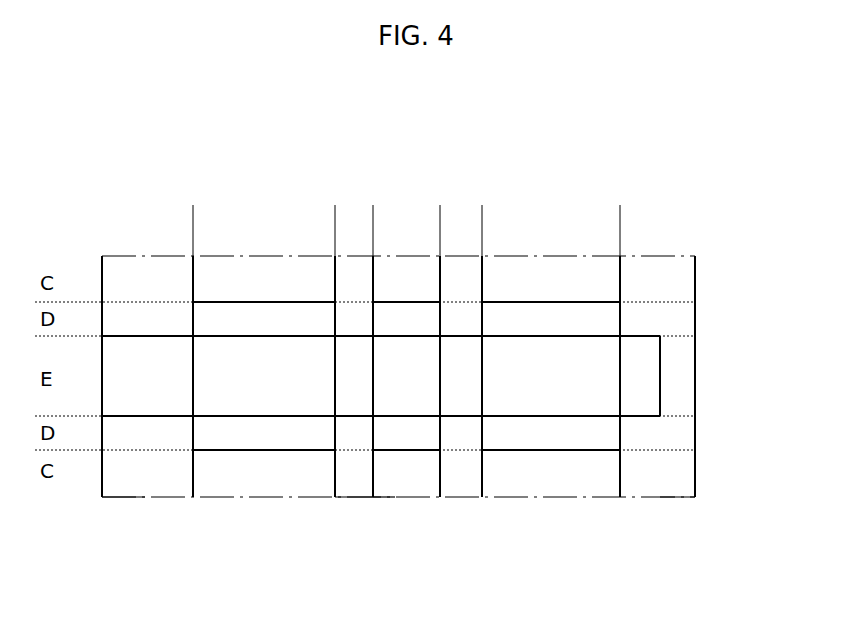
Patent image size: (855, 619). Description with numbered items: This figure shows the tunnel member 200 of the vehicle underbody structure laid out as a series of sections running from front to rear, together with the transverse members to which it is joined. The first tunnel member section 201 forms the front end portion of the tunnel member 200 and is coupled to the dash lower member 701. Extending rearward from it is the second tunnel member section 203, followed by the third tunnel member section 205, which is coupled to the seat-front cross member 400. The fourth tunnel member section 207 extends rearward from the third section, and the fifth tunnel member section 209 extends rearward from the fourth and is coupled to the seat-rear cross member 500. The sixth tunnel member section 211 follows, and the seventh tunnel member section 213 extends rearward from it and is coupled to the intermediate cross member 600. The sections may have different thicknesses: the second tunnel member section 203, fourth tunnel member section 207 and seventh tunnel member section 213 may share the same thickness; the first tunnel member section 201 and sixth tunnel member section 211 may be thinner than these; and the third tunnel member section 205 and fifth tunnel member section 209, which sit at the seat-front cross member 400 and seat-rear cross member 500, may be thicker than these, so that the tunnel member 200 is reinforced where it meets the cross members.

The tunnel member 200 is at (661, 378).
The first tunnel member section 201 is at (140, 368).
The second tunnel member section 203 is at (261, 368).
The third tunnel member section 205 is at (363, 368).
The fourth tunnel member section 207 is at (415, 368).
The fifth tunnel member section 209 is at (455, 368).
The sixth tunnel member section 211 is at (548, 368).
The seventh tunnel member section 213 is at (643, 368).
The seat-front cross member 400 is at (353, 475).
The seat-rear cross member 500 is at (405, 475).
The intermediate cross member 600 is at (652, 475).
The dash lower member 701 is at (152, 475).